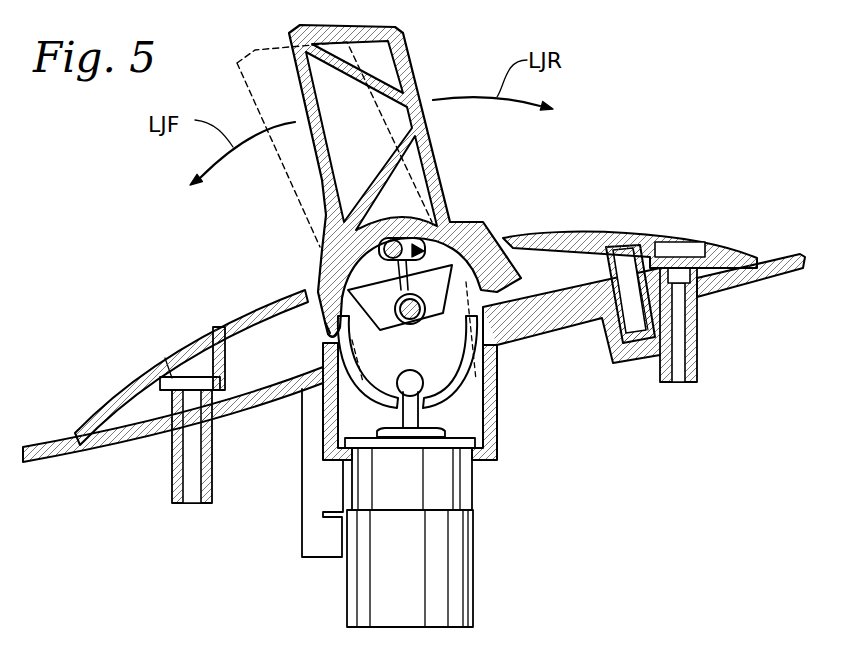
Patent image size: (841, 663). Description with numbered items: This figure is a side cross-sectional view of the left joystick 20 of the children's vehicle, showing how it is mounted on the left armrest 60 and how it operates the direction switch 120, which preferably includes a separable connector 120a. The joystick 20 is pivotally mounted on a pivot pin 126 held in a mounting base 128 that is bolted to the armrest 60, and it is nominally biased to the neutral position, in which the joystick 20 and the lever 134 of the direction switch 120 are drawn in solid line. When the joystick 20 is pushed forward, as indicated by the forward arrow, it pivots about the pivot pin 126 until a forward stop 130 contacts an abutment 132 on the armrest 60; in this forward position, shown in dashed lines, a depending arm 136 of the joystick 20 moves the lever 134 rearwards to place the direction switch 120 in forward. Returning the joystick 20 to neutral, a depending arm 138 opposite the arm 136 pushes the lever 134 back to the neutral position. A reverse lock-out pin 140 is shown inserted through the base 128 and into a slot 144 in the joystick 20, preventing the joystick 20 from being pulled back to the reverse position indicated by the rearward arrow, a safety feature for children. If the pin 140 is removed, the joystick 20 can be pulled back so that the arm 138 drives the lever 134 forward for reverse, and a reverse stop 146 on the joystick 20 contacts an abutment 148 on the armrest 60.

The left joystick 20 is at (408, 62).
The left armrest 60 is at (42, 442).
The direction switch 120 is at (470, 482).
The separable connector 120a is at (473, 583).
The pivot pin 126 is at (415, 323).
The mounting base 128 is at (245, 310).
The forward stop 130 is at (326, 338).
The abutment 132 is at (330, 346).
The lever 134 is at (400, 408).
The depending arm 136 is at (405, 387).
The depending arm 138 is at (447, 407).
The reverse lock-out pin 140 is at (395, 242).
The slot 144 is at (421, 252).
The reverse stop 146 is at (495, 292).
The abutment 148 is at (500, 300).